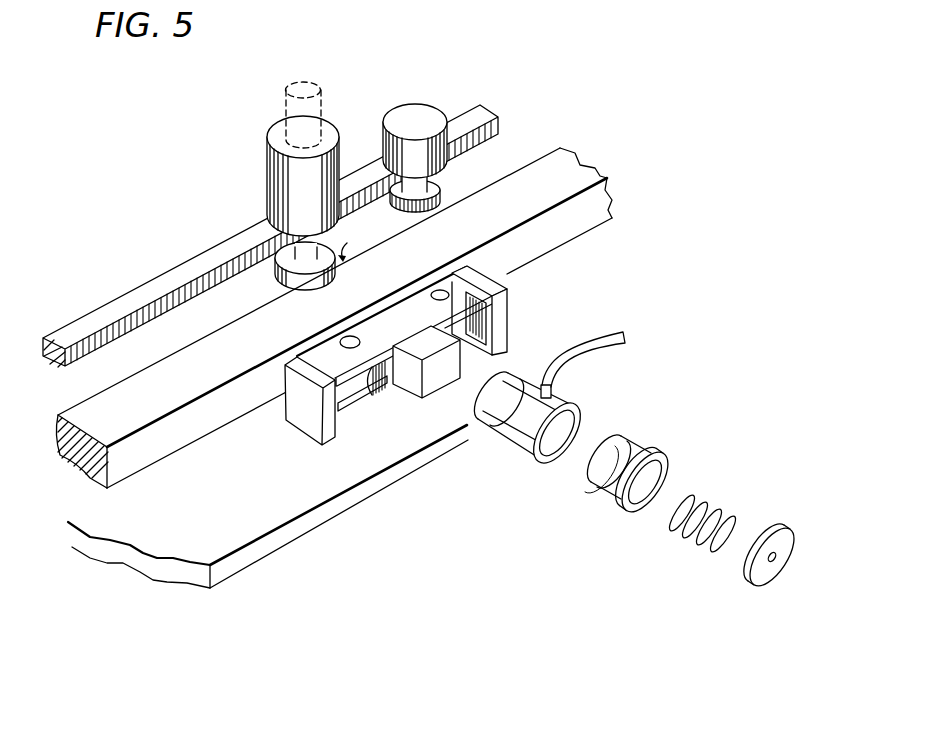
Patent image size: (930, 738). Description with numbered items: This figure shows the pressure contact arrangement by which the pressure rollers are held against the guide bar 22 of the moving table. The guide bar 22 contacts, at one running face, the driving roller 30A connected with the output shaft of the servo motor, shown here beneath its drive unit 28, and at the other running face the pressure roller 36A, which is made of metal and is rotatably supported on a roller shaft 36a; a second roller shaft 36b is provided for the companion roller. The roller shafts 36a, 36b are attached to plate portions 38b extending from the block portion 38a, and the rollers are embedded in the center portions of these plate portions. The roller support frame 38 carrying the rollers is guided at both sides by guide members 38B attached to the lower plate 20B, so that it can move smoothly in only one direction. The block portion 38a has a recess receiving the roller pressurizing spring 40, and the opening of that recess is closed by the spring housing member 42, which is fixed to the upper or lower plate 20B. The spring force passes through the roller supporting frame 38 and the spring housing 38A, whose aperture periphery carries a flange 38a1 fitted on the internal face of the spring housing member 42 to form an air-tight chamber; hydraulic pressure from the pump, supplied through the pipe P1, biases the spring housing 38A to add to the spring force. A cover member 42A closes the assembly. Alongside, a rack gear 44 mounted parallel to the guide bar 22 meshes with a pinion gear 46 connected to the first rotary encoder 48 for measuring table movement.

The lower plate 20B is at (347, 477).
The guide bar 22 is at (172, 452).
The drive cylinder 28 is at (279, 133).
The driving roller 30A is at (270, 240).
The pressure roller 36A is at (358, 390).
The roller shaft 36a is at (350, 336).
The roller shaft 36b is at (440, 290).
The roller support frame 38 is at (443, 353).
The spring housing 38A is at (633, 443).
The guide member 38B is at (300, 422).
The block portion 38a is at (448, 378).
The flange 38a1 is at (610, 492).
The plate portion 38b is at (387, 386).
The roller pressurizing spring 40 is at (725, 508).
The spring housing member 42 is at (520, 455).
The cover member 42A is at (757, 578).
The rack gear 44 is at (121, 299).
The pinion gear 46 is at (443, 184).
The first rotary encoder 48 is at (392, 150).
The pipe P1 is at (612, 347).